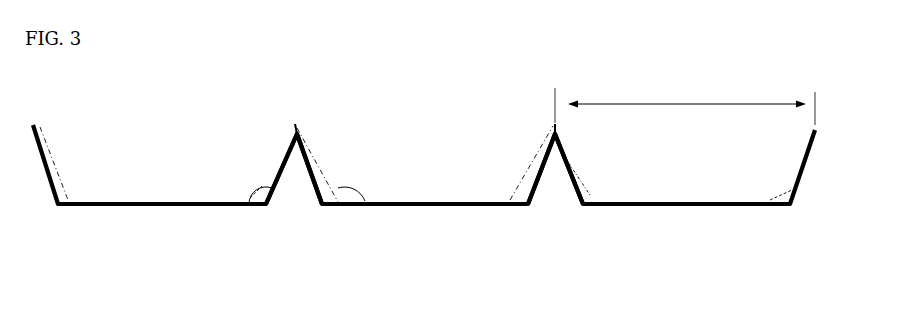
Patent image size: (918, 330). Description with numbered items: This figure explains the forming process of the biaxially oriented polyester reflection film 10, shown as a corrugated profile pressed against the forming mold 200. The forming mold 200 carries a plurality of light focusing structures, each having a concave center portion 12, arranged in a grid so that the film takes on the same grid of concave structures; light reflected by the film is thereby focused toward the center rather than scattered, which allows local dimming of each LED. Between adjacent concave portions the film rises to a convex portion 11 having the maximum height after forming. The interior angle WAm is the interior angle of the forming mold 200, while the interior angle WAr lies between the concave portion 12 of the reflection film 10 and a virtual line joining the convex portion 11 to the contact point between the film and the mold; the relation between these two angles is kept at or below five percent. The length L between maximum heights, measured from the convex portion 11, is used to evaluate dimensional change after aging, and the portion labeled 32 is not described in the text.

The forming mold 200 is at (533, 207).
The convex portion 11 is at (295, 122).
The biaxially oriented polyester reflection film 10 is at (587, 192).
The concave center portion 12 is at (428, 207).
The inclined side wall portion 32 is at (352, 207).
The interior angle of the forming mold WAm is at (256, 184).
The interior angle of the reflection film WAr is at (357, 177).
The length between maximum heights L is at (685, 104).